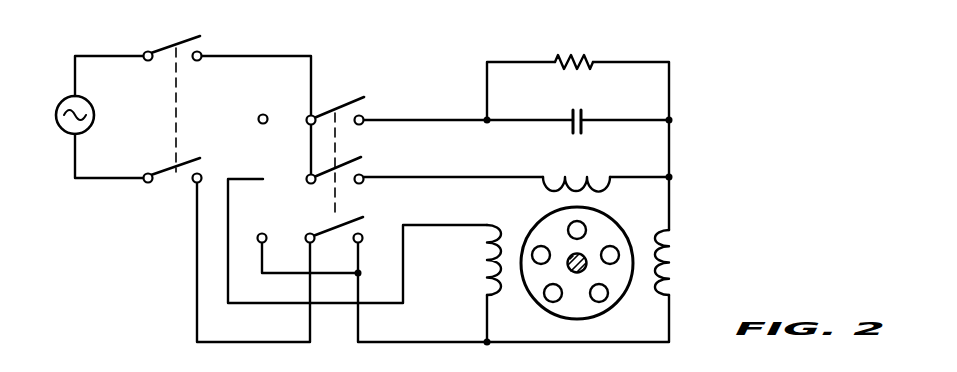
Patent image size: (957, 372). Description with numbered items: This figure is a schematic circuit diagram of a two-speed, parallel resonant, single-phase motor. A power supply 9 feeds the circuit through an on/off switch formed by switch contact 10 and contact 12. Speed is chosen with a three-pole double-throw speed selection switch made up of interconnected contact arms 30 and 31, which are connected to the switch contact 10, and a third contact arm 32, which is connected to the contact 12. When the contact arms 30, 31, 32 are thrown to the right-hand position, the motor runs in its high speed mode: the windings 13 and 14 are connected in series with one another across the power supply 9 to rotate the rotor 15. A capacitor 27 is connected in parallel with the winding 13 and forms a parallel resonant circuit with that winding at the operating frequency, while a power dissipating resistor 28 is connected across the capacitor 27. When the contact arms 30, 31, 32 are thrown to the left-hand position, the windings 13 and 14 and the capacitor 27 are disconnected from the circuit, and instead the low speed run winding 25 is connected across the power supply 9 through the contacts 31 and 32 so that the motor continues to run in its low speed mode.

The power supply 9 is at (65, 100).
The switch contact 10 is at (160, 18).
The switch contact 12 is at (166, 183).
The winding 13 is at (598, 175).
The winding 14 is at (672, 232).
The rotor 15 is at (617, 300).
The low speed run winding 25 is at (487, 293).
The capacitor 27 is at (583, 117).
The power dissipating resistor 28 is at (590, 60).
The contact arm 30 is at (356, 100).
The contact arm 31 is at (351, 160).
The contact arm 32 is at (346, 222).